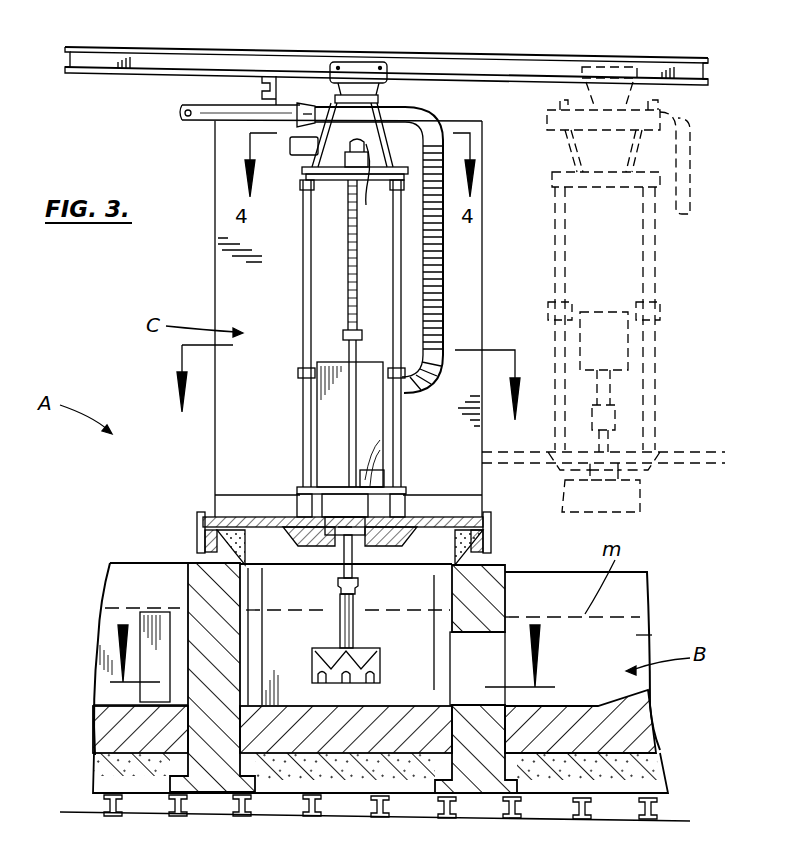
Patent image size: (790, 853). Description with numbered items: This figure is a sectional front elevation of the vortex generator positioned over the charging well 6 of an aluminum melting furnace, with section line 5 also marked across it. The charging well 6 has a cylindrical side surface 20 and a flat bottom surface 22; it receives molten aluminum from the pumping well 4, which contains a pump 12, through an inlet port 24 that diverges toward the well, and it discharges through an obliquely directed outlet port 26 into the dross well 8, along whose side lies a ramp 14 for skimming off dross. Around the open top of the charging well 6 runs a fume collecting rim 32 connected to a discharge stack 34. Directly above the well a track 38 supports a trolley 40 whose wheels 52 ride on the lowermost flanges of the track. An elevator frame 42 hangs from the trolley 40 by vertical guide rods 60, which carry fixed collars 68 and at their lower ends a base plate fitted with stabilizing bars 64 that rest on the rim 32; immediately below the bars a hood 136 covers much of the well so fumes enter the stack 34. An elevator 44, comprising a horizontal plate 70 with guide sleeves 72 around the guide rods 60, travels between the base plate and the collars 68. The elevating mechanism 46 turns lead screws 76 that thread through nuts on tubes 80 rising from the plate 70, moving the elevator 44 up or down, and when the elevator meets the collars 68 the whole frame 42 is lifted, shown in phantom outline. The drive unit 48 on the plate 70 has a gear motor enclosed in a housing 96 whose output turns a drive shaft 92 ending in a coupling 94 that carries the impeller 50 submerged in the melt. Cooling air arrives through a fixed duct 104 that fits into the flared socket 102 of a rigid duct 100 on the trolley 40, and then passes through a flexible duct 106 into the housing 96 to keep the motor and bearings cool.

The track 38 is at (160, 63).
The wheels 52 is at (356, 62).
The fixed duct 104 is at (200, 120).
The socket 102 is at (305, 103).
The rigid duct 100 is at (390, 117).
The flexible duct 106 is at (445, 292).
The discharge stack 34 is at (215, 233).
The elevating mechanism 46 is at (395, 150).
The trolley 40 is at (333, 192).
The guide sleeves 72 is at (366, 185).
The elevator frame 42 is at (302, 290).
The collars 68 is at (297, 151).
The lead screws 76 is at (350, 283).
The tubes 80 is at (357, 421).
The housing 96 is at (322, 399).
The elevator 44 is at (302, 482).
The drive unit 48 is at (340, 502).
The horizontal plate 70 is at (372, 478).
The fume collecting rim 32 is at (198, 539).
The stabilizing bars 64 is at (230, 513).
The hood 136 is at (432, 524).
The cylindrical side surface 20 is at (412, 573).
The drive shaft 92 is at (338, 578).
The coupling 94 is at (341, 600).
The impeller 50 is at (366, 642).
The pumping well 4 is at (115, 571).
The pump 12 is at (95, 669).
The inlet port 24 is at (263, 672).
The outlet port 26 is at (490, 652).
The dross well 8 is at (650, 633).
The ramp 14 is at (648, 690).
The bottom surface 22 is at (392, 706).
The guide rods 60 is at (303, 323).
The charging well 6 is at (447, 576).
The section line 5 is at (345, 399).